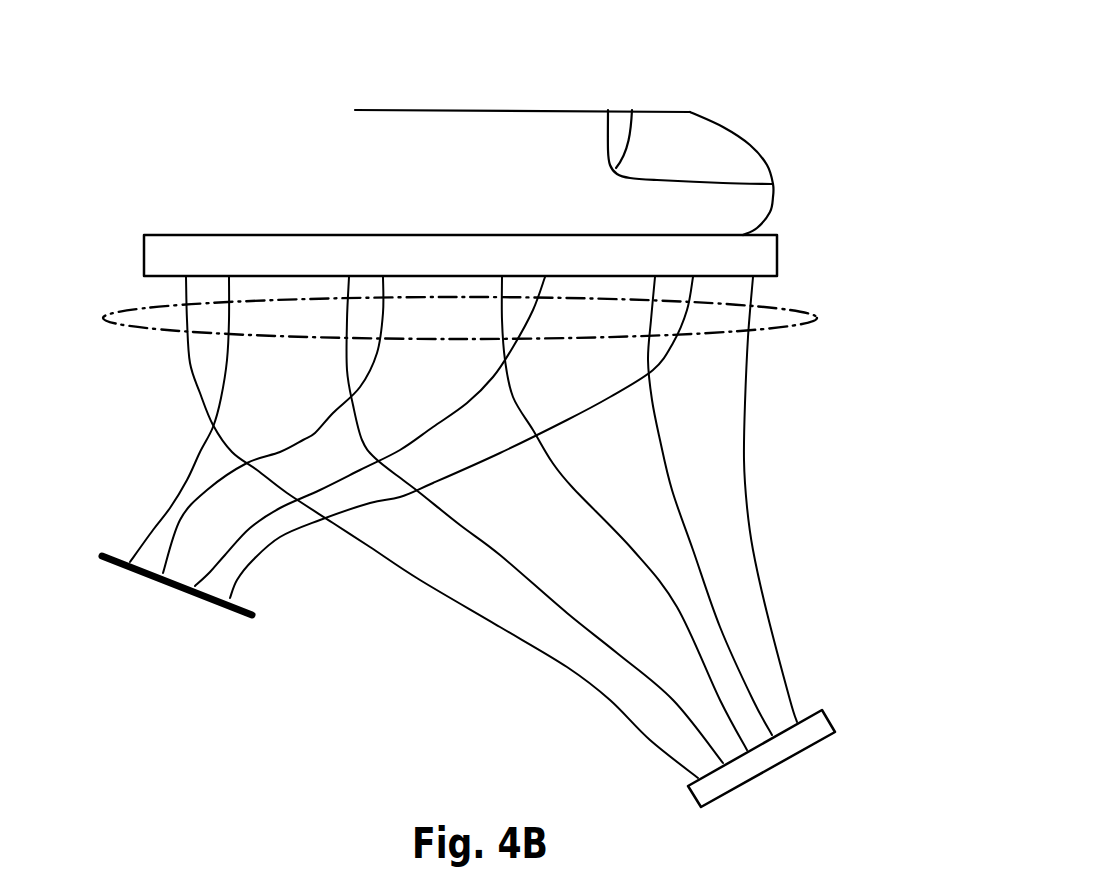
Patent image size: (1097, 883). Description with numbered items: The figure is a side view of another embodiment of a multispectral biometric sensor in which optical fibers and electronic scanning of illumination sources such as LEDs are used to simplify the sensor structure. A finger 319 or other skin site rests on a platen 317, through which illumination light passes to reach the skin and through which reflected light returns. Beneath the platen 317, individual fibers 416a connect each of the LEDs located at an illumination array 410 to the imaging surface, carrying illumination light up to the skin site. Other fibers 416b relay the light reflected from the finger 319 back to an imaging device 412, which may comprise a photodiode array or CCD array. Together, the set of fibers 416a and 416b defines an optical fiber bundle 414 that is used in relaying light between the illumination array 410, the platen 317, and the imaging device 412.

The finger 319 is at (725, 127).
The platen 317 is at (777, 252).
The optical fiber bundle 414 is at (106, 316).
The individual fibers 416a is at (193, 470).
The other fibers 416b is at (420, 580).
The illumination array 410 is at (104, 566).
The imaging device 412 is at (760, 776).